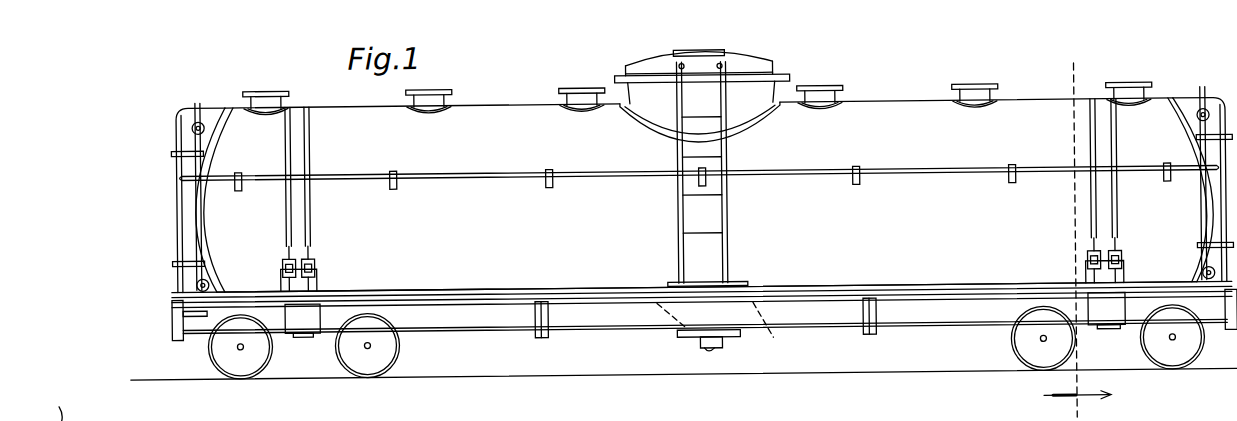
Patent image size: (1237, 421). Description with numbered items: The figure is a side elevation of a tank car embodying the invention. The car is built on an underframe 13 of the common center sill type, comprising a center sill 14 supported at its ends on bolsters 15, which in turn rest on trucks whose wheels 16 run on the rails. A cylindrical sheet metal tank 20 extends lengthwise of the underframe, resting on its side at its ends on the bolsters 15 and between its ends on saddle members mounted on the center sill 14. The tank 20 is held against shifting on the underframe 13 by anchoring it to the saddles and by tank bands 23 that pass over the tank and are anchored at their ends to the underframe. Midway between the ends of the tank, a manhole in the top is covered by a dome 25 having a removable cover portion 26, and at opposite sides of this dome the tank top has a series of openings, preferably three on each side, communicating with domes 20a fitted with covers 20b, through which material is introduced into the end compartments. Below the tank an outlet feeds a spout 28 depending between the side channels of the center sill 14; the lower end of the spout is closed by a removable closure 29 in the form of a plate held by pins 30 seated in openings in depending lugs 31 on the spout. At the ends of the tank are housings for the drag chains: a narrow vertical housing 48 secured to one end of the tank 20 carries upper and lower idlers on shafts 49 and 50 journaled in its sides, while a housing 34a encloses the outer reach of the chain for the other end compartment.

The underframe 13 is at (622, 329).
The center sill 14 is at (490, 324).
The bolster 15 is at (300, 319).
The wheel 16 is at (215, 348).
The cylindrical tank 20 is at (699, 194).
The dome 20a is at (270, 100).
The cover 20b is at (258, 90).
The tank band 23 is at (290, 108).
The dome 25 is at (650, 96).
The removable cover portion 26 is at (753, 61).
The spout 28 is at (724, 330).
The removable closure 29 is at (680, 331).
The pin 30 is at (700, 341).
The depending lug 31 is at (708, 348).
The housing 34a is at (188, 224).
The vertical housing 48 is at (1213, 215).
The shaft 49 is at (1213, 93).
The shaft 50 is at (1203, 276).